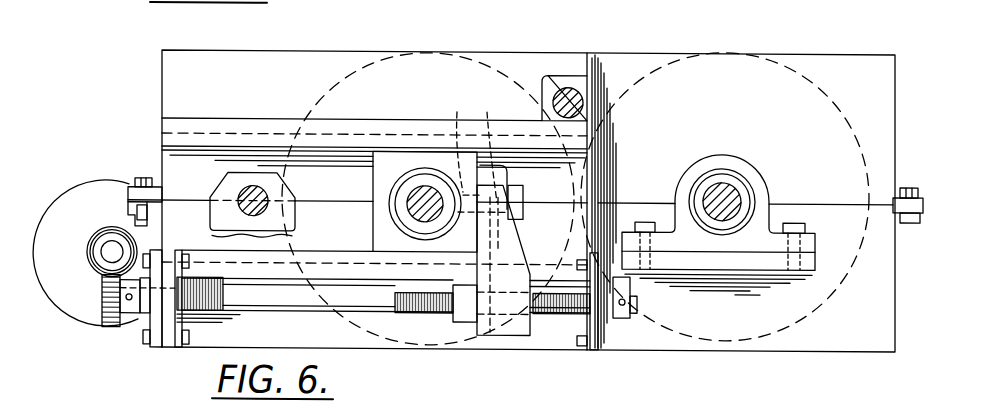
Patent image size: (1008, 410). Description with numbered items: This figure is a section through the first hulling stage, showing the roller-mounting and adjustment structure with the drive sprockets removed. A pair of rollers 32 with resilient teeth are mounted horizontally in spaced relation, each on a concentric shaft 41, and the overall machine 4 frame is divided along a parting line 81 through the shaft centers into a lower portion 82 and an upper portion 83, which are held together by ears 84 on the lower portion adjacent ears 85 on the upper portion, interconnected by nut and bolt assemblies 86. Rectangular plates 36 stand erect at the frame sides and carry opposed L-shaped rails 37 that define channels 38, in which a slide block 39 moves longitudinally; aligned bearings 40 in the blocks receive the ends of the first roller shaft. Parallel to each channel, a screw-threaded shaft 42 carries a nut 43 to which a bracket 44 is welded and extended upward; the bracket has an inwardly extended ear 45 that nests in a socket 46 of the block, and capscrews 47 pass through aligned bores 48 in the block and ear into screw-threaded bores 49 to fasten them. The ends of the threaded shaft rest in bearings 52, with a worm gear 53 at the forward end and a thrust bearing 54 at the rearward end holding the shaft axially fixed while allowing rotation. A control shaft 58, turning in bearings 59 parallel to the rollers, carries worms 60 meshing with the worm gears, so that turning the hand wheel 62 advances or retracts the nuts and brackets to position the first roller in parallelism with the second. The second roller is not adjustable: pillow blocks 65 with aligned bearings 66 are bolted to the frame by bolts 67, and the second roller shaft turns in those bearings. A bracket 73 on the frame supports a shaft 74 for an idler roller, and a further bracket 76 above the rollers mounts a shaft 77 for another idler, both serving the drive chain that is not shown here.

The machine 4 is at (555, 227).
The rollers 32 is at (338, 58).
The plates 36 is at (622, 58).
The rails or guides 37 is at (284, 124).
The channels 38 is at (160, 140).
The slide block 39 is at (402, 158).
The bearings 40 is at (400, 192).
The shaft 41 is at (405, 208).
The screw-threaded shaft 42 is at (207, 297).
The nut 43 is at (463, 307).
The bracket 44 is at (503, 318).
The ear 45 is at (458, 118).
The socket 46 is at (497, 158).
The capscrews 47 is at (524, 195).
The bore 48 is at (503, 264).
The screw-threaded bores 49 is at (475, 233).
The bearings 52 is at (146, 328).
The worm gear 53 is at (103, 285).
The thrust bearing 54 is at (627, 310).
The control shaft 58 is at (113, 248).
The bearings 59 is at (90, 249).
The worms 60 is at (98, 262).
The hand wheel 62 is at (97, 187).
The pillow blocks 65 is at (712, 155).
The bearings 66 is at (735, 182).
The bolts 67 is at (646, 218).
The bracket 73 is at (226, 189).
The shaft 74 is at (253, 184).
The bracket 76 is at (567, 84).
The shaft 77 is at (556, 90).
The parting line 81 is at (841, 196).
The lower portion 82 is at (872, 334).
The upper portion 83 is at (878, 94).
The ears 84 is at (128, 199).
The ears 85 is at (128, 190).
The nut and bolt assemblies 86 is at (144, 178).